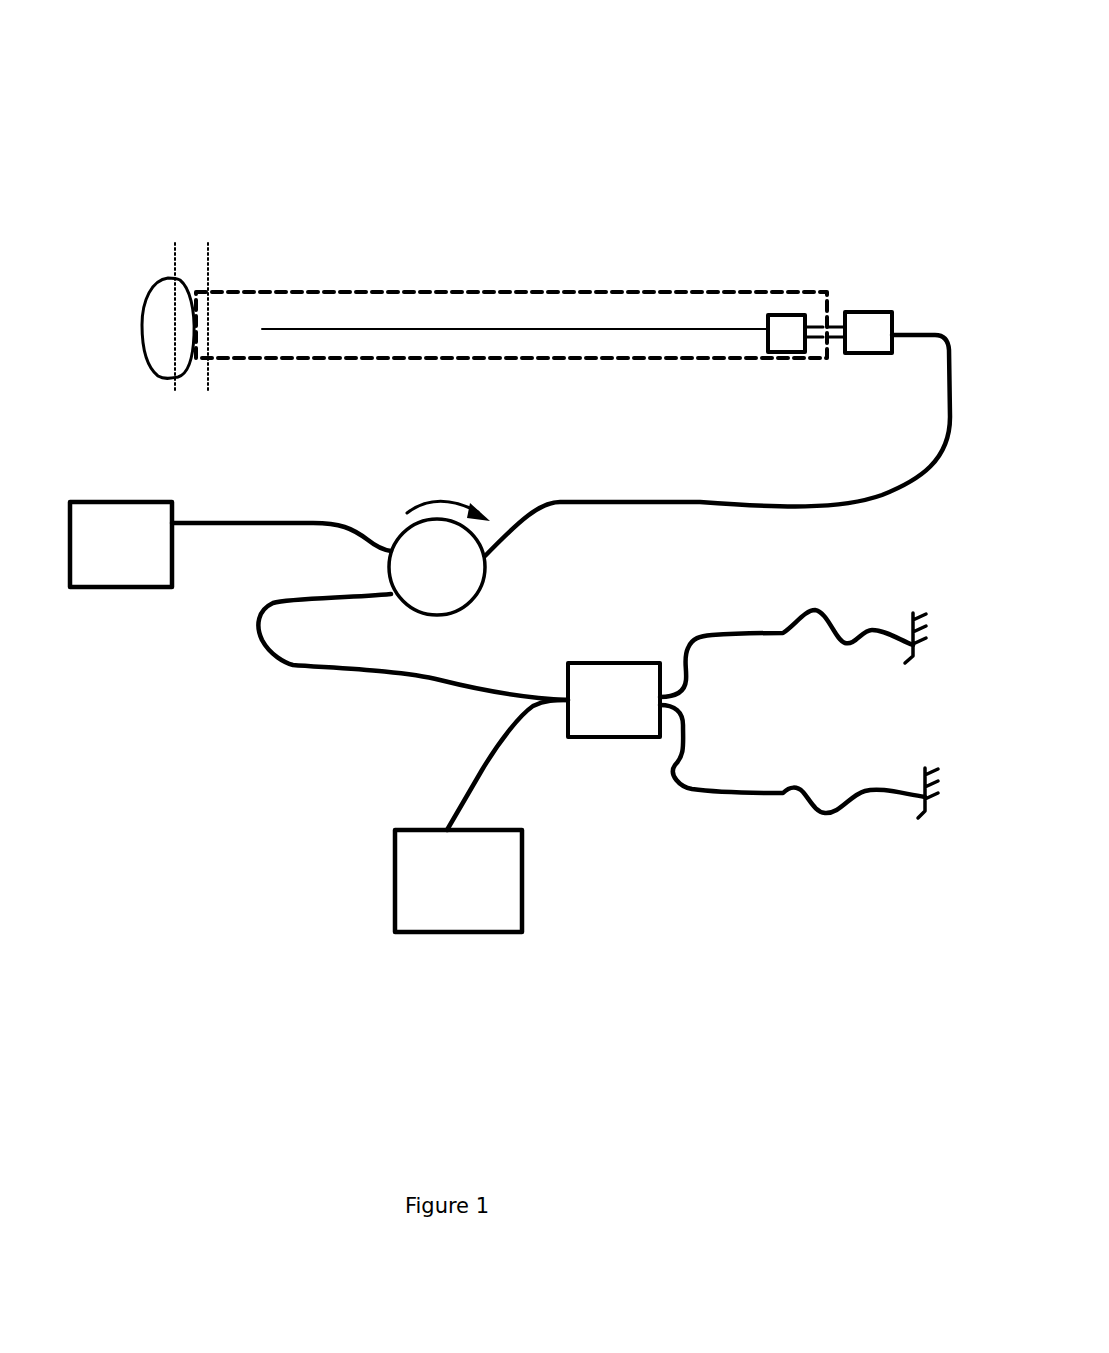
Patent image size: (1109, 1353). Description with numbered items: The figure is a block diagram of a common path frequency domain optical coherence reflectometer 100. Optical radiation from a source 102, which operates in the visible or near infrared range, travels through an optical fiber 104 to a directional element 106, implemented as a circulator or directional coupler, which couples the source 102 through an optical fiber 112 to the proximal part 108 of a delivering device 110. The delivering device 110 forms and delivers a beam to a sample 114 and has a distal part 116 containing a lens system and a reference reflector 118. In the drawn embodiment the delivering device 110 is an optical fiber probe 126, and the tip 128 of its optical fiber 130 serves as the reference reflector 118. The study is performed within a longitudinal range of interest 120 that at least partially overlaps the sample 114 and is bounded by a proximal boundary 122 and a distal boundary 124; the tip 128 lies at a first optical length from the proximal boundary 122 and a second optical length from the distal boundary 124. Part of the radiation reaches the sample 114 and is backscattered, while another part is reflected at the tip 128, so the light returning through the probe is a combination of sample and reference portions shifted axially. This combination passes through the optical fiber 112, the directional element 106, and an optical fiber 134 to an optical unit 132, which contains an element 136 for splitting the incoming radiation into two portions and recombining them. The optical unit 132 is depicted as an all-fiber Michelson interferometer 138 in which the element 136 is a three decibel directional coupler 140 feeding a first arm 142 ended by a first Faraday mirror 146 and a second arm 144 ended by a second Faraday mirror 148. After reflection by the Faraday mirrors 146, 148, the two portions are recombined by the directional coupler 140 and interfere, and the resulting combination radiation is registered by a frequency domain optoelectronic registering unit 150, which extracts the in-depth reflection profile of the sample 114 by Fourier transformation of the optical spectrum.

The common path frequency domain optical coherence reflectometer 100 is at (833, 93).
The source 102 is at (121, 544).
The optical fiber 104 is at (263, 518).
The directional element 106 is at (388, 523).
The proximal part 108 is at (793, 267).
The delivering device 110 is at (658, 307).
The optical fiber 112 is at (737, 495).
The sample 114 is at (140, 305).
The distal part 116 is at (232, 363).
The reference reflector 118 is at (265, 328).
The longitudinal range of interest 120 is at (195, 268).
The proximal boundary 122 is at (213, 250).
The distal boundary 124 is at (175, 393).
The optical fiber probe 126 is at (485, 307).
The tip 128 is at (311, 297).
The optical fiber 130 is at (580, 326).
The optical unit 132 is at (700, 845).
The optical fiber 134 is at (280, 665).
The element for splitting and recombining 136 is at (623, 655).
The Michelson interferometer 138 is at (757, 855).
The directional coupler 140 is at (622, 750).
The first arm 142 is at (823, 610).
The second arm 144 is at (822, 815).
The first Faraday mirror 146 is at (918, 605).
The second Faraday mirror 148 is at (932, 815).
The frequency domain optoelectronic registering unit 150 is at (481, 816).